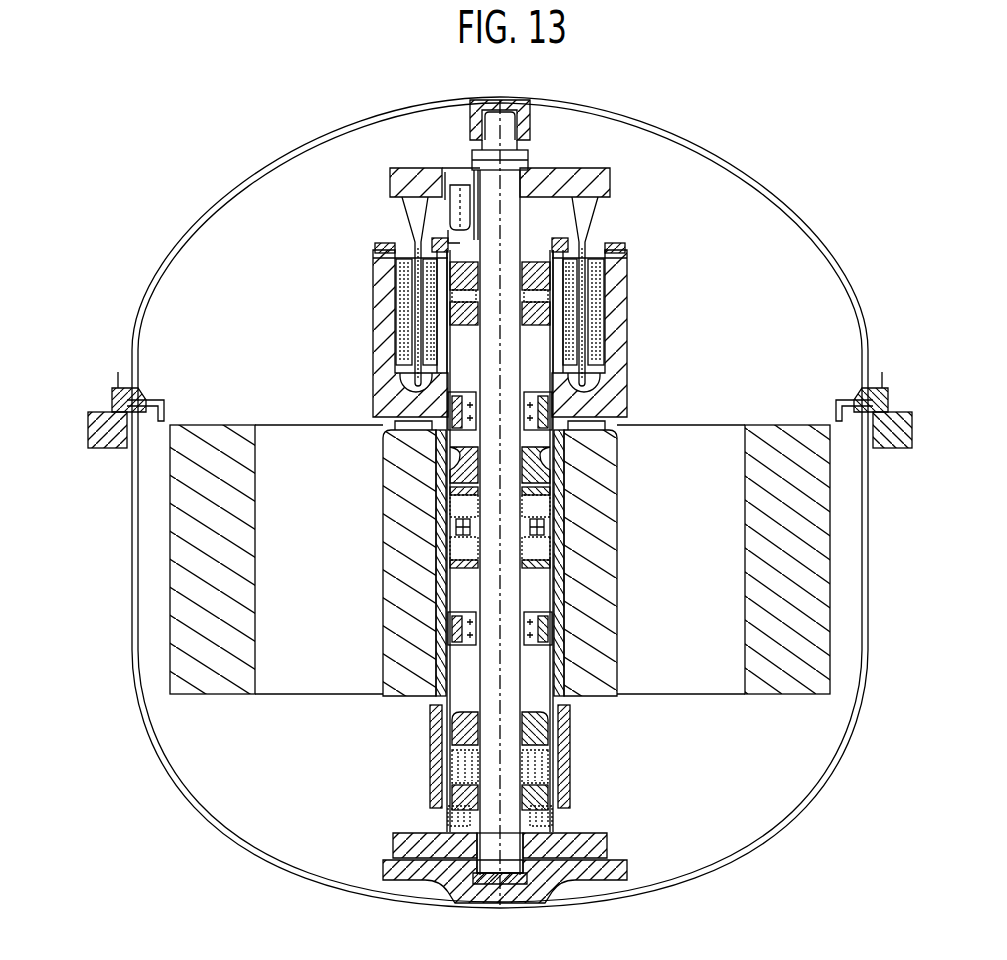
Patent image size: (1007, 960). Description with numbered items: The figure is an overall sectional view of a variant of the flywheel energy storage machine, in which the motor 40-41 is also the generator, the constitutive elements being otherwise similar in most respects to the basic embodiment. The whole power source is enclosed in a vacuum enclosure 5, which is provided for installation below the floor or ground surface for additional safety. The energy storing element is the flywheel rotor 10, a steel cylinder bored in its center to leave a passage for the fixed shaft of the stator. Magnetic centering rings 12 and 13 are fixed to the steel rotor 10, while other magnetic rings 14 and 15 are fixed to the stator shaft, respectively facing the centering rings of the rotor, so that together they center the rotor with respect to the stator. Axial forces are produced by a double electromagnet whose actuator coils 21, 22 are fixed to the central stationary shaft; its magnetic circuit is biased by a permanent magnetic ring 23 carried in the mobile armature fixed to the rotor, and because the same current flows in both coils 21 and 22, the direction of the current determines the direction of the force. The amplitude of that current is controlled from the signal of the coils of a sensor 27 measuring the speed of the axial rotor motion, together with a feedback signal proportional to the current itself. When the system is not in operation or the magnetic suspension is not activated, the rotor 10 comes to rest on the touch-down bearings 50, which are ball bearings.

The vacuum enclosure 5 is at (796, 170).
The flywheel rotor 10 is at (788, 696).
The magnetic centering ring 12 is at (570, 315).
The magnetic ring 14 is at (598, 300).
The motor-generator 40-41 is at (590, 310).
The touch-down bearings 50 is at (538, 417).
The actuator coil of double electromagnet 21 is at (547, 505).
The actuator coil of double electromagnet 22 is at (547, 535).
The permanent magnetic ring 23 is at (547, 521).
The magnetic centering ring 13 is at (572, 765).
The magnetic ring 15 is at (574, 745).
The sensor 27 is at (538, 829).